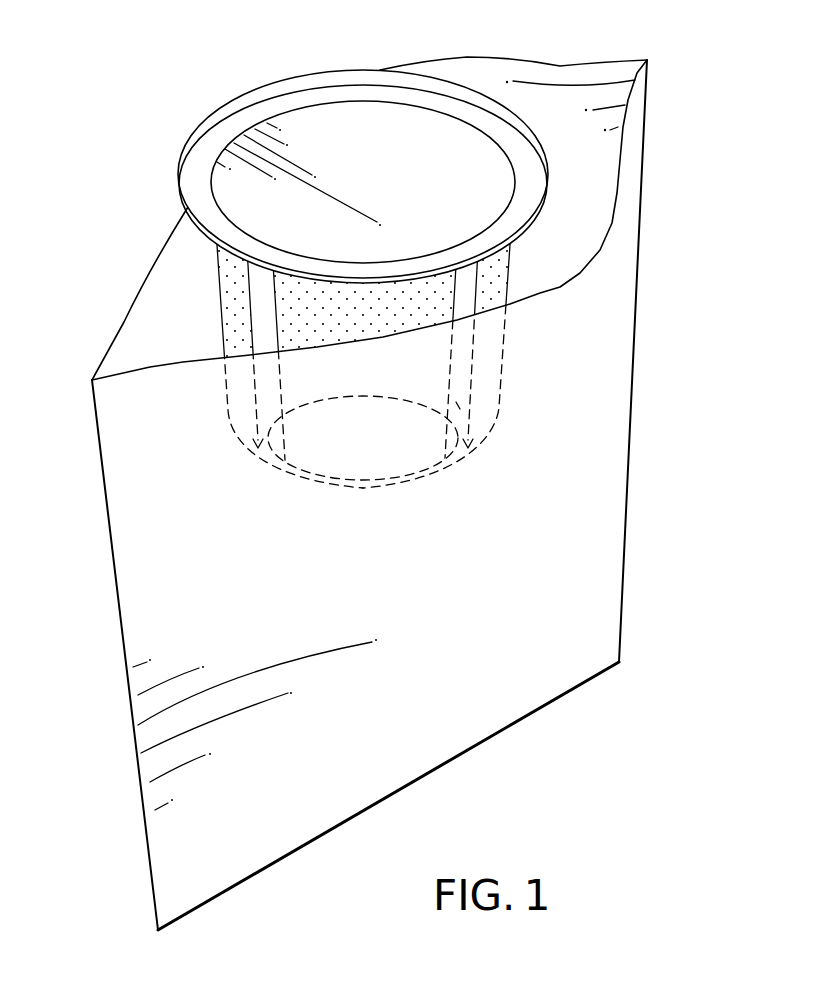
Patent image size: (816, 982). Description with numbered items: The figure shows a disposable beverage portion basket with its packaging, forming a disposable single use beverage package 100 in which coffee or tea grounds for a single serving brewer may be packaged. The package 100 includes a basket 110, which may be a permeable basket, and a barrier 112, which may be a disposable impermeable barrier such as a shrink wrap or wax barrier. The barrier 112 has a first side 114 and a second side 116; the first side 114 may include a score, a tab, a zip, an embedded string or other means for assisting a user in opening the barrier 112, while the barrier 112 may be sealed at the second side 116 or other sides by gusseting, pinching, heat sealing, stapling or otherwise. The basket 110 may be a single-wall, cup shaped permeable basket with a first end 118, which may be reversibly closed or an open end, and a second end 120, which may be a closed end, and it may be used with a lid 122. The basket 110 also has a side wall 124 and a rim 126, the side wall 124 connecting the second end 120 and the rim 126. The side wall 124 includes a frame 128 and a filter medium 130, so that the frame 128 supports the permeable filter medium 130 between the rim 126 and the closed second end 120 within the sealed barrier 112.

The disposable single use beverage package 100 is at (404, 481).
The basket 110 is at (537, 103).
The barrier 112 is at (642, 480).
The first side 114 is at (122, 319).
The second side 116 is at (295, 868).
The first end 118 is at (325, 282).
The second end 120 is at (375, 391).
The lid 122 is at (355, 149).
The side wall 124 is at (500, 354).
The rim 126 is at (268, 83).
The frame 128 is at (348, 482).
The filter medium 130 is at (322, 318).